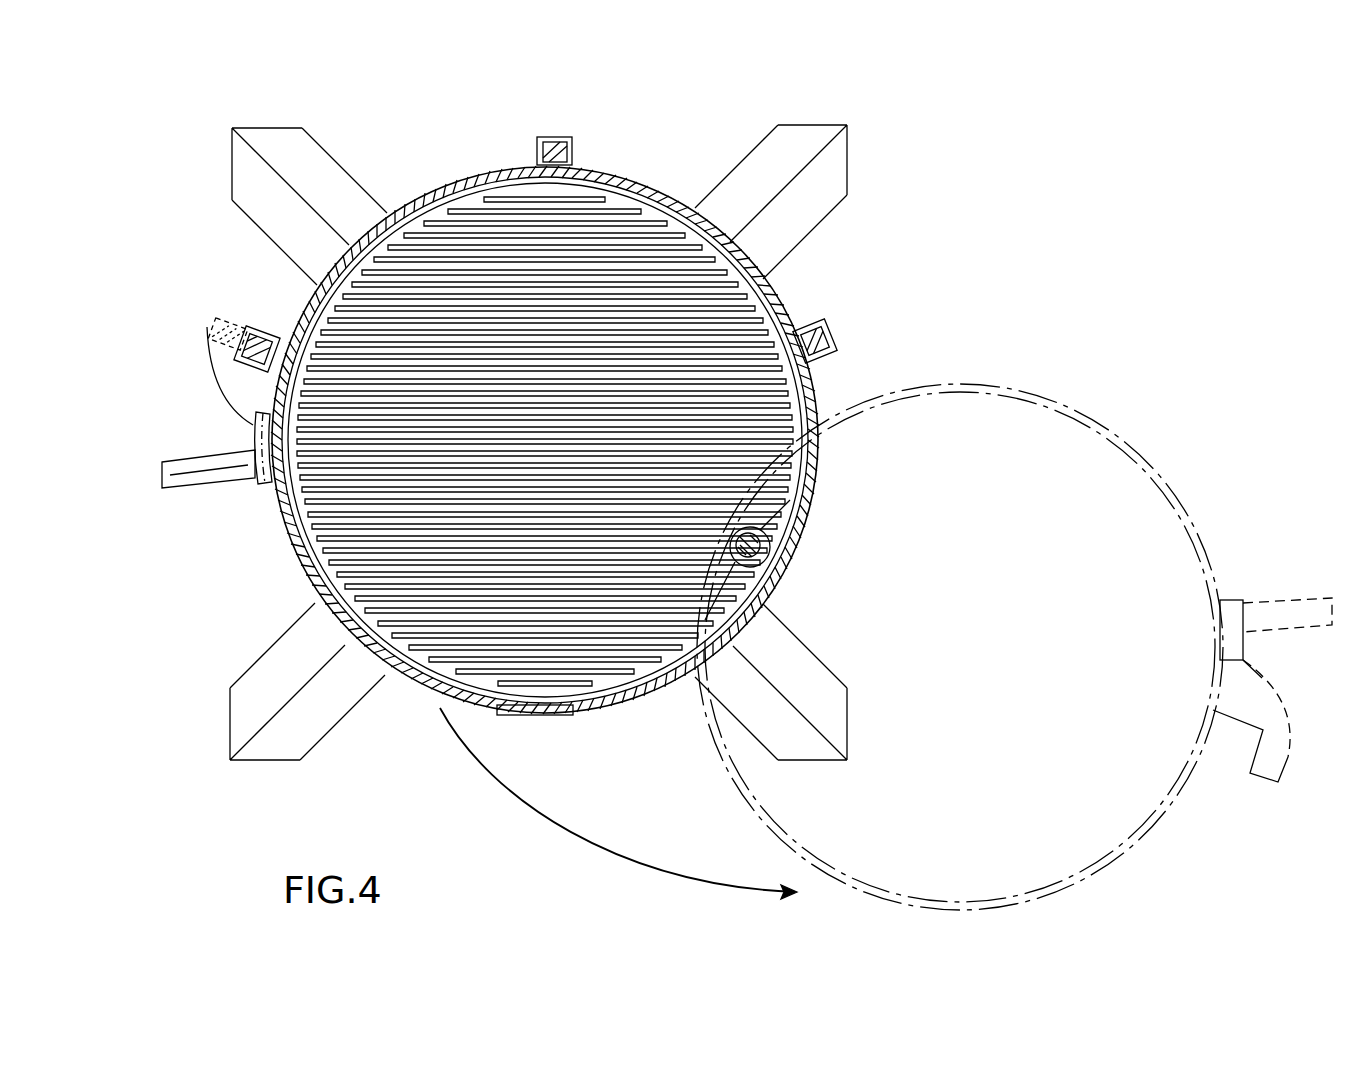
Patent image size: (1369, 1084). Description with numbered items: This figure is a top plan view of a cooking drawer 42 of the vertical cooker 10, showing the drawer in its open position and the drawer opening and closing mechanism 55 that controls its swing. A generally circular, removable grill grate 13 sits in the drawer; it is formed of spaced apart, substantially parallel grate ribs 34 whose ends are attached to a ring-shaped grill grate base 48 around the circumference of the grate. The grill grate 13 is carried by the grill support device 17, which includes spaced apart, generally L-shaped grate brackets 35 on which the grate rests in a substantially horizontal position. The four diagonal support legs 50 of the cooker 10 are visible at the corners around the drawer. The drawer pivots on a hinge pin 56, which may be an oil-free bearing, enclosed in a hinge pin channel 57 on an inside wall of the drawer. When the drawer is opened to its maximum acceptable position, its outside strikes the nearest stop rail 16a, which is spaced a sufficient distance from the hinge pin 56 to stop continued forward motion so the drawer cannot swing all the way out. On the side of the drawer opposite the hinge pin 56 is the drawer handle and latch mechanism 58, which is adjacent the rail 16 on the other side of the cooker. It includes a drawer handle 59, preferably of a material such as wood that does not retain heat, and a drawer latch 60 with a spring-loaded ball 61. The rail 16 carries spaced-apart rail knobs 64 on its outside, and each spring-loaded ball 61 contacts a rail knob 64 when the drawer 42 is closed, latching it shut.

The vertical cooker 10 is at (1084, 222).
The grill grate 13 is at (529, 385).
The rail 16 is at (563, 150).
The stop rail 16a is at (832, 344).
The grill support device 17 is at (787, 294).
The grate ribs 34 is at (317, 531).
The grate brackets 35 is at (440, 246).
The cooking drawer 42 is at (775, 581).
The grill grate base 48 is at (337, 572).
The support legs 50 is at (245, 165).
The drawer opening and closing mechanism 55 is at (835, 467).
The hinge pin 56 is at (760, 548).
The hinge pin channel 57 is at (770, 526).
The drawer handle and latch mechanism 58 is at (172, 320).
The drawer handle 59 is at (180, 478).
The drawer latch 60 is at (215, 338).
The spring-loaded ball 61 is at (215, 321).
The rail knobs 64 is at (237, 322).